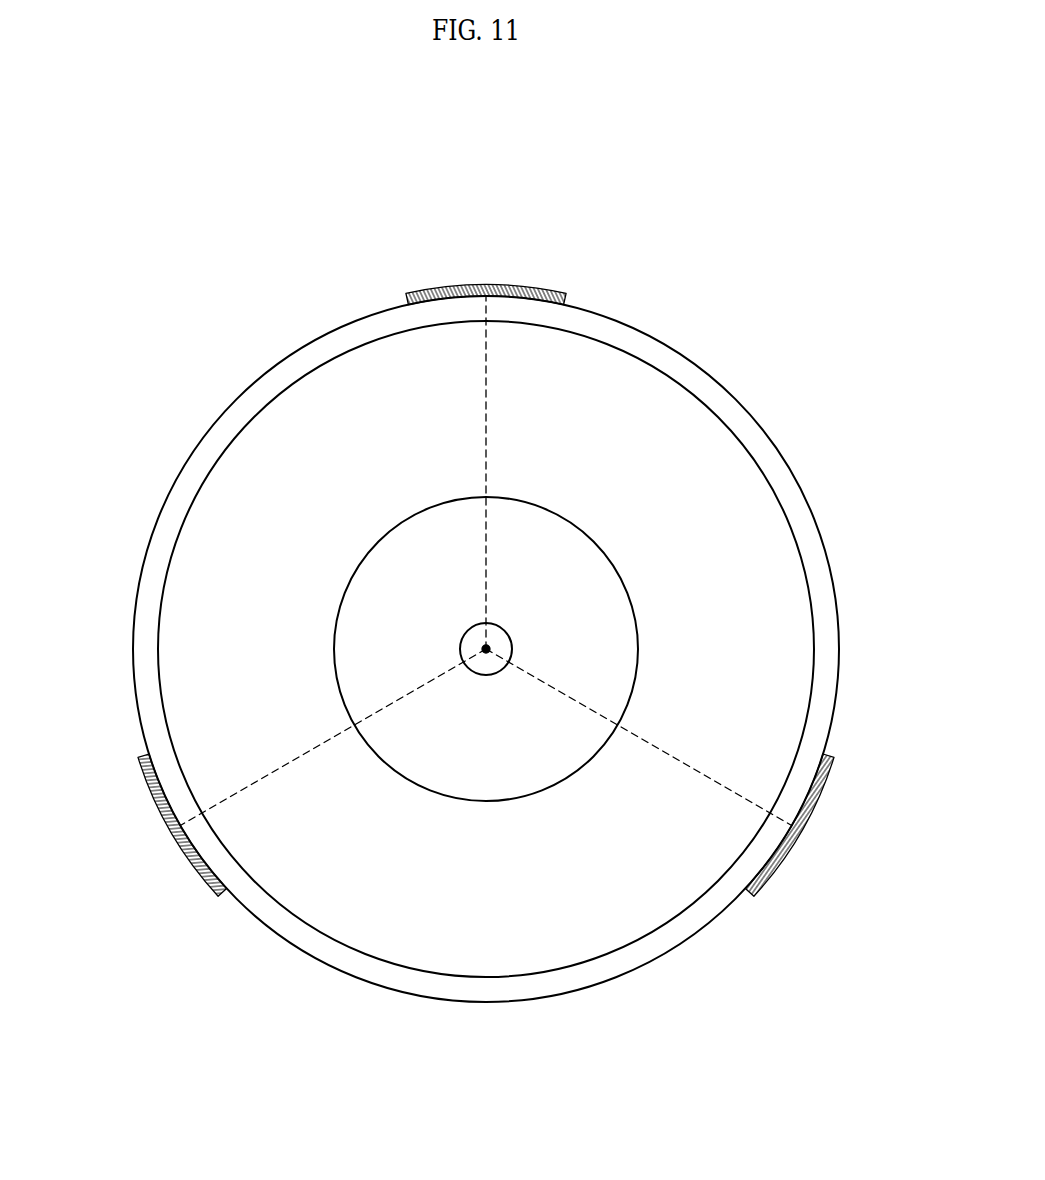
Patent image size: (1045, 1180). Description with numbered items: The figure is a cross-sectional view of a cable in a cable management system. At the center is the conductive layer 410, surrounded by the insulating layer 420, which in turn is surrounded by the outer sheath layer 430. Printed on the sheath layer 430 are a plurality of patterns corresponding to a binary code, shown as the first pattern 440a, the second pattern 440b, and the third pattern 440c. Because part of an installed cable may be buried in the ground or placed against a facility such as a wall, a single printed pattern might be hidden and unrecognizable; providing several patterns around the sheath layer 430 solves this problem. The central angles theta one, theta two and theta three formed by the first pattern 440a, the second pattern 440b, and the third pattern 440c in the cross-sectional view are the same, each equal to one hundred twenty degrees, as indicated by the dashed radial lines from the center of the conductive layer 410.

The conductive layer 410 is at (602, 588).
The insulating layer 420 is at (635, 408).
The sheath layer 430 is at (272, 383).
The first pattern 440a is at (467, 283).
The second pattern 440b is at (160, 806).
The third pattern 440c is at (813, 805).